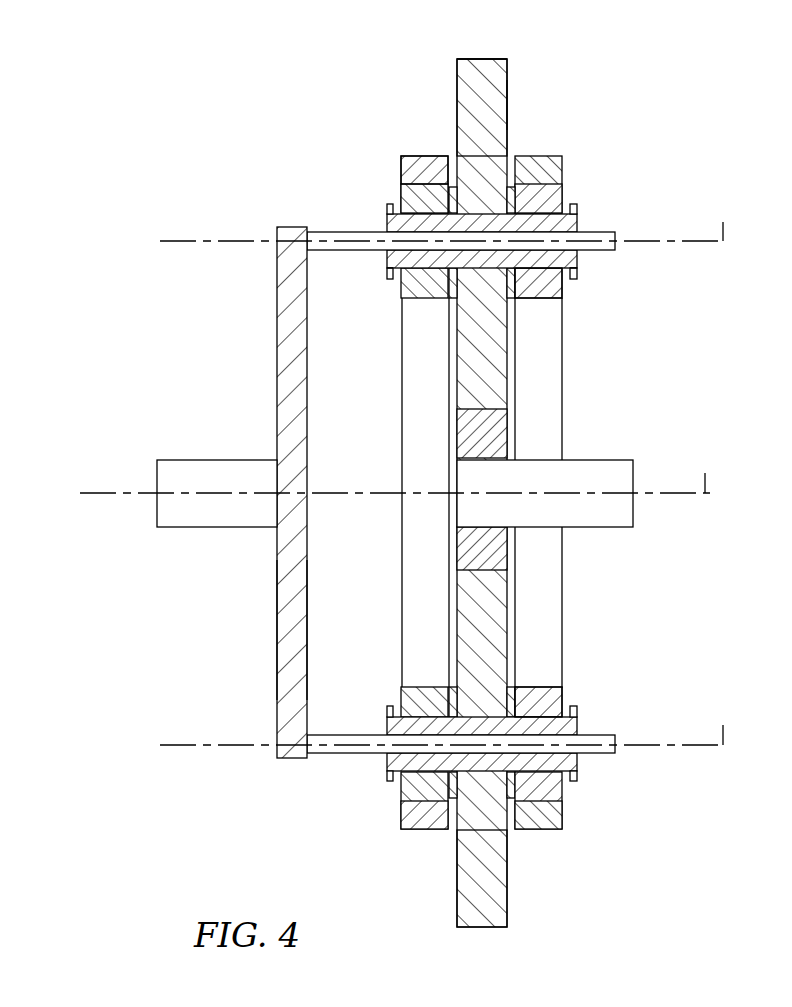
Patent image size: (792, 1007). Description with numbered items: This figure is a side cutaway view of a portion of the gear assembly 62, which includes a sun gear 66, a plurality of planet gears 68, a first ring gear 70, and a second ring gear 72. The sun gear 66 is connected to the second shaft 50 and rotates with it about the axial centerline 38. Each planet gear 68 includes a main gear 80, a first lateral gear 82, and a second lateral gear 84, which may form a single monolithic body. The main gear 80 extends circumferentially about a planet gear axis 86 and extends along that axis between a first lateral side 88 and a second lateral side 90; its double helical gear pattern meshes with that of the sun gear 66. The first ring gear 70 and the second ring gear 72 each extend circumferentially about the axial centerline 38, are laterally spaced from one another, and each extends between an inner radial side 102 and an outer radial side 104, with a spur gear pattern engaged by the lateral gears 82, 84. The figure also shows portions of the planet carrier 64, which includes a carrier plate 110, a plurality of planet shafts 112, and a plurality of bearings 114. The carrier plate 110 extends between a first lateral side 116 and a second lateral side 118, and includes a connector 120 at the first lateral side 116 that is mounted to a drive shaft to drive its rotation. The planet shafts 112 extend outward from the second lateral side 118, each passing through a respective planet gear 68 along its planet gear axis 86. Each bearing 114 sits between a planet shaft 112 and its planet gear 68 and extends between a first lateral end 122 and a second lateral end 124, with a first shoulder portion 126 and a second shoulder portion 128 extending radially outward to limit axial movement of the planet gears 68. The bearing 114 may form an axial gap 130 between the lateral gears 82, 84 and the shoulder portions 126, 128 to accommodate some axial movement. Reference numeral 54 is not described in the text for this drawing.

The axial centerline 38 is at (705, 473).
The second shaft 50 is at (605, 530).
The drive assembly 54 is at (698, 100).
The gear assembly 62 is at (577, 491).
The planet carrier 64 is at (266, 492).
The sun gear 66 is at (500, 430).
The planet gears 68 is at (496, 125).
The first ring gear 70 is at (387, 455).
The second ring gear 72 is at (575, 484).
The main gear 80 is at (496, 78).
The first lateral gear 82 is at (405, 197).
The second lateral gear 84 is at (556, 195).
The planet gear axis 86 is at (723, 222).
The first lateral side 88 is at (457, 72).
The second lateral side 90 is at (507, 102).
The inner radial side 102 is at (405, 198).
The outer radial side 104 is at (437, 157).
The carrier plate 110 is at (277, 345).
The planet shafts 112 is at (347, 252).
The bearings 114 is at (548, 284).
The first lateral side 116 is at (277, 620).
The second lateral side 118 is at (309, 602).
The connector 120 is at (183, 530).
The first lateral end 122 is at (382, 213).
The second lateral end 124 is at (584, 213).
The first shoulder portion 126 is at (388, 268).
The second shoulder portion 128 is at (577, 262).
The axial gap 130 is at (398, 300).